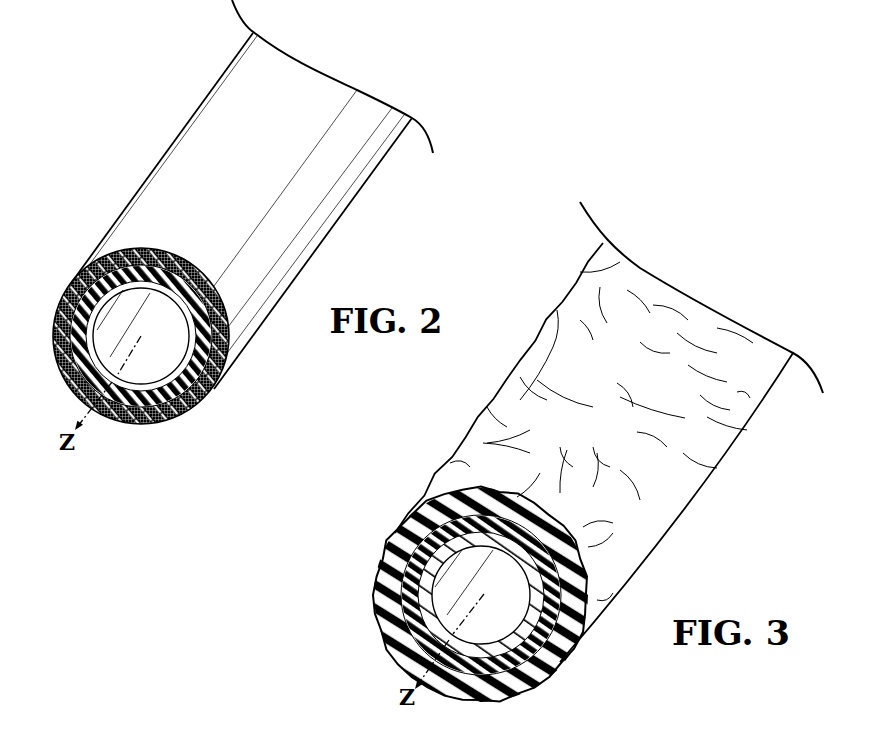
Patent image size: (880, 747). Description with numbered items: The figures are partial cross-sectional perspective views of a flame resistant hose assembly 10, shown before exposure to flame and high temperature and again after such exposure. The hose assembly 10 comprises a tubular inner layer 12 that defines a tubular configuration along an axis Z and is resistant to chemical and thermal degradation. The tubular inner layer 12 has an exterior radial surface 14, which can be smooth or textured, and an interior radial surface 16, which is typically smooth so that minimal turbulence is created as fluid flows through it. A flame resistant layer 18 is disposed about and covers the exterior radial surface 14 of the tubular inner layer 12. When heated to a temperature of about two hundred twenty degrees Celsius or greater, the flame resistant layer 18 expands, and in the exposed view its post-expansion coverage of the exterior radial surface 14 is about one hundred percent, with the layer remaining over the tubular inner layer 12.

In FIG. 2, the hose assembly 10 is at (153, 78).
In FIG. 3, the hose assembly 10 is at (532, 284).
In FIG. 2, the tubular inner layer 12 is at (62, 302).
In FIG. 3, the tubular inner layer 12 is at (390, 560).
In FIG. 2, the exterior radial surface 14 is at (187, 400).
In FIG. 3, the exterior radial surface 14 is at (550, 648).
In FIG. 2, the interior radial surface 16 is at (167, 374).
In FIG. 3, the interior radial surface 16 is at (506, 630).
In FIG. 2, the flame resistant layer 18 is at (262, 270).
In FIG. 3, the flame resistant layer 18 is at (470, 452).